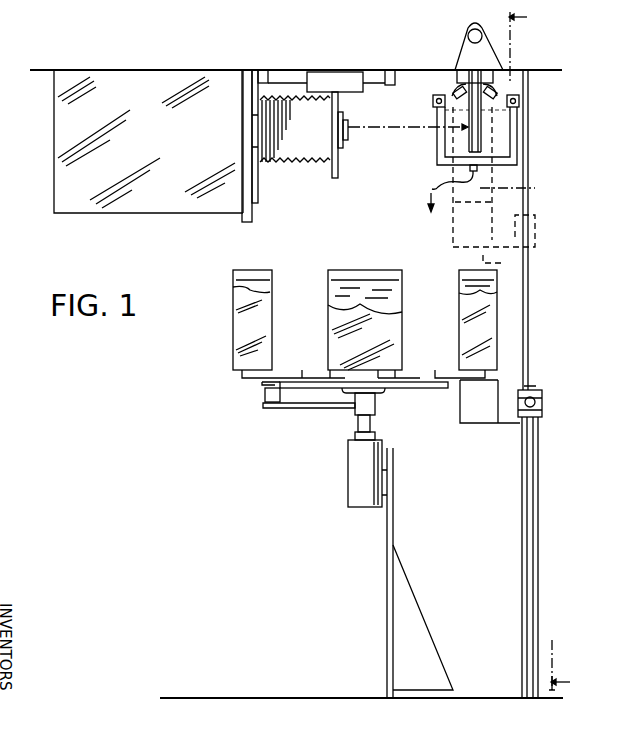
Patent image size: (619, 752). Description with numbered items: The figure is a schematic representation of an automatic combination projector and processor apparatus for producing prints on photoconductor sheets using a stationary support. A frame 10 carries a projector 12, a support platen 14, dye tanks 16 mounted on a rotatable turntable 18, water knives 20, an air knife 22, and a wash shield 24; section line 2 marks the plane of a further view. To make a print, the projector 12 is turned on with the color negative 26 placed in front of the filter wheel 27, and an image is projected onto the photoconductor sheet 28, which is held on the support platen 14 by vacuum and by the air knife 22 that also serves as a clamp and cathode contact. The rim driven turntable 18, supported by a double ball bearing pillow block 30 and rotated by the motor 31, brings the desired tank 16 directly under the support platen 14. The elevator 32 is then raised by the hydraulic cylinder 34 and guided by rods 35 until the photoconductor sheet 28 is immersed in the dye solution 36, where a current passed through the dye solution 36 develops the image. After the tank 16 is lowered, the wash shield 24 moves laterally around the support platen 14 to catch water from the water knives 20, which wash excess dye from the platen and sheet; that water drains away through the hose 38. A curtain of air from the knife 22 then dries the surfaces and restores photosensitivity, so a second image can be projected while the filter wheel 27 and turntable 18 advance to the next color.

The section line 2- 2 is at (546, 351).
The frame 10 is at (222, 70).
The projector 12 is at (297, 100).
The support platen 14 is at (466, 72).
The dye tanks 16 is at (260, 333).
The turntable 18 is at (329, 395).
The water knives 20 is at (455, 90).
The air knife 22 is at (478, 70).
The wash shield 24 is at (526, 144).
The color negative 26 is at (250, 133).
The filter wheel 27 is at (248, 77).
The photoconductor sheet 28 is at (462, 143).
The double ball bearing pillow block 30 is at (366, 460).
The motor 31 is at (266, 398).
The elevator 32 is at (472, 418).
The hydraulic cylinder 34 is at (530, 435).
The rods 35 is at (530, 556).
The dye solution 36 is at (270, 294).
The hose 38 is at (434, 187).